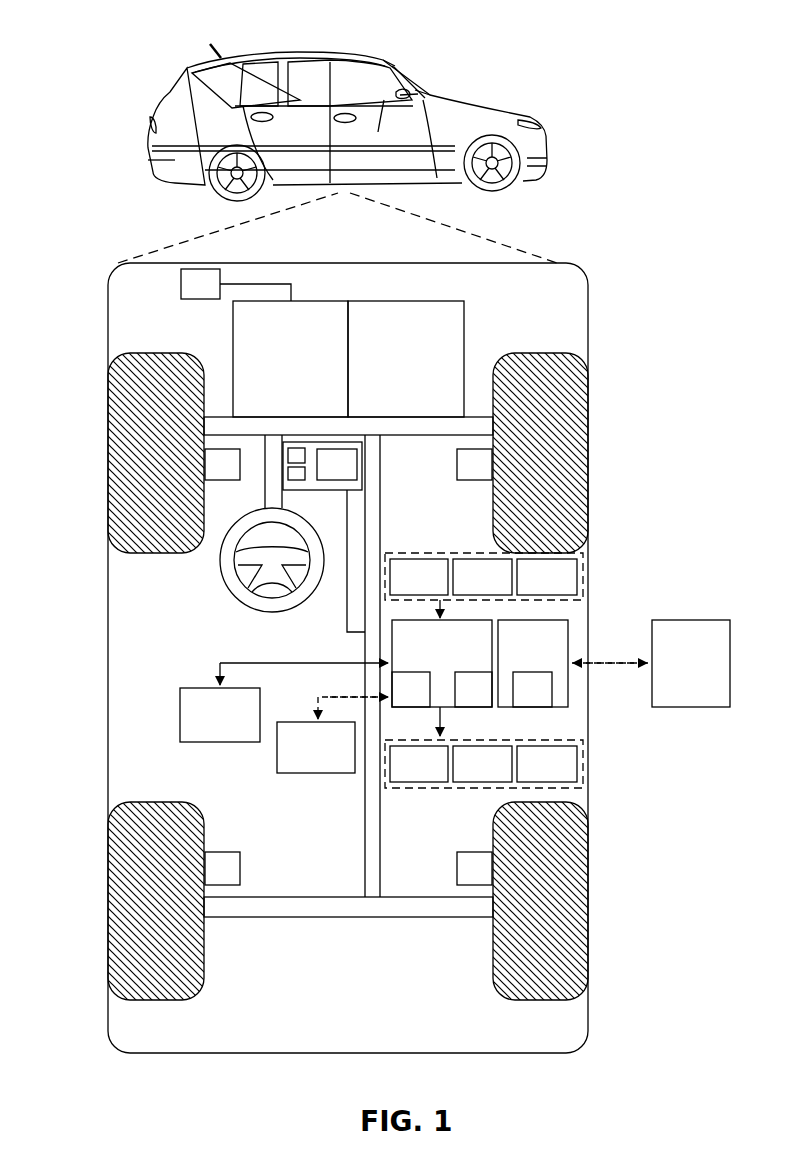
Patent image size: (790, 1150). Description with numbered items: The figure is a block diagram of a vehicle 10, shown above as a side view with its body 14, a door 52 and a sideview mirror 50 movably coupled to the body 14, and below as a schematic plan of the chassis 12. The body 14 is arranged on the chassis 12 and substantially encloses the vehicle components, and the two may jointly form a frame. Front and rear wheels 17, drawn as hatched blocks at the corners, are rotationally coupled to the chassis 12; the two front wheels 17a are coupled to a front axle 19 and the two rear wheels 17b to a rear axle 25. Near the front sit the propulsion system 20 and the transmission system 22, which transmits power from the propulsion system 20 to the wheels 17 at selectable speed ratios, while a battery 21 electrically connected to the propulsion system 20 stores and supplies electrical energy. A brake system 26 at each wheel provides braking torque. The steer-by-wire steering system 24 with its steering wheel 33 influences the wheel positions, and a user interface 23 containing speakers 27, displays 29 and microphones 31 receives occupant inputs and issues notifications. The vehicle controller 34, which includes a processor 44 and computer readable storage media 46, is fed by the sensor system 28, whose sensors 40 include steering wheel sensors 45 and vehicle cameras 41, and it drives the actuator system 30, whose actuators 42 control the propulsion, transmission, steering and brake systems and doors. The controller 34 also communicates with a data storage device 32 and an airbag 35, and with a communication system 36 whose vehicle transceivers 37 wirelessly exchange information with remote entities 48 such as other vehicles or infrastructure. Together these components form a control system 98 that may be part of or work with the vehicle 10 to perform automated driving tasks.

The vehicle 10 is at (497, 106).
The chassis 12 is at (364, 805).
The body 14 is at (108, 630).
The front and rear wheels 17 is at (348, 665).
The front wheels 17a is at (128, 442).
The rear wheels 17b is at (128, 899).
The front axle 19 is at (435, 435).
The propulsion system 20 is at (302, 369).
The battery 21 is at (202, 269).
The transmission system 22 is at (417, 369).
The user interface 23 is at (289, 510).
The steering system 24 is at (287, 494).
The rear axle 25 is at (407, 897).
The brake system 26 is at (234, 476).
The speakers 27 is at (259, 451).
The sensor system 28 is at (484, 558).
The displays 29 is at (285, 476).
The actuator system 30 is at (484, 781).
The microphones 31 is at (348, 476).
The data storage device 32 is at (329, 759).
The steering wheel 33 is at (221, 575).
The vehicle controller 34 is at (442, 663).
The airbag 35 is at (233, 727).
The communication system 36 is at (533, 663).
The vehicle transceivers 37 is at (543, 702).
The sensors 40 is at (432, 589).
The vehicle cameras 41 is at (560, 589).
The actuator 42 is at (432, 776).
The processor 44 is at (422, 702).
The steering wheel sensors 45 is at (496, 589).
The computer readable storage device or media 46 is at (485, 702).
The remote entities 48 is at (703, 673).
The sideview mirror 50 is at (412, 96).
The door 52 is at (378, 132).
The control system 98 is at (318, 653).